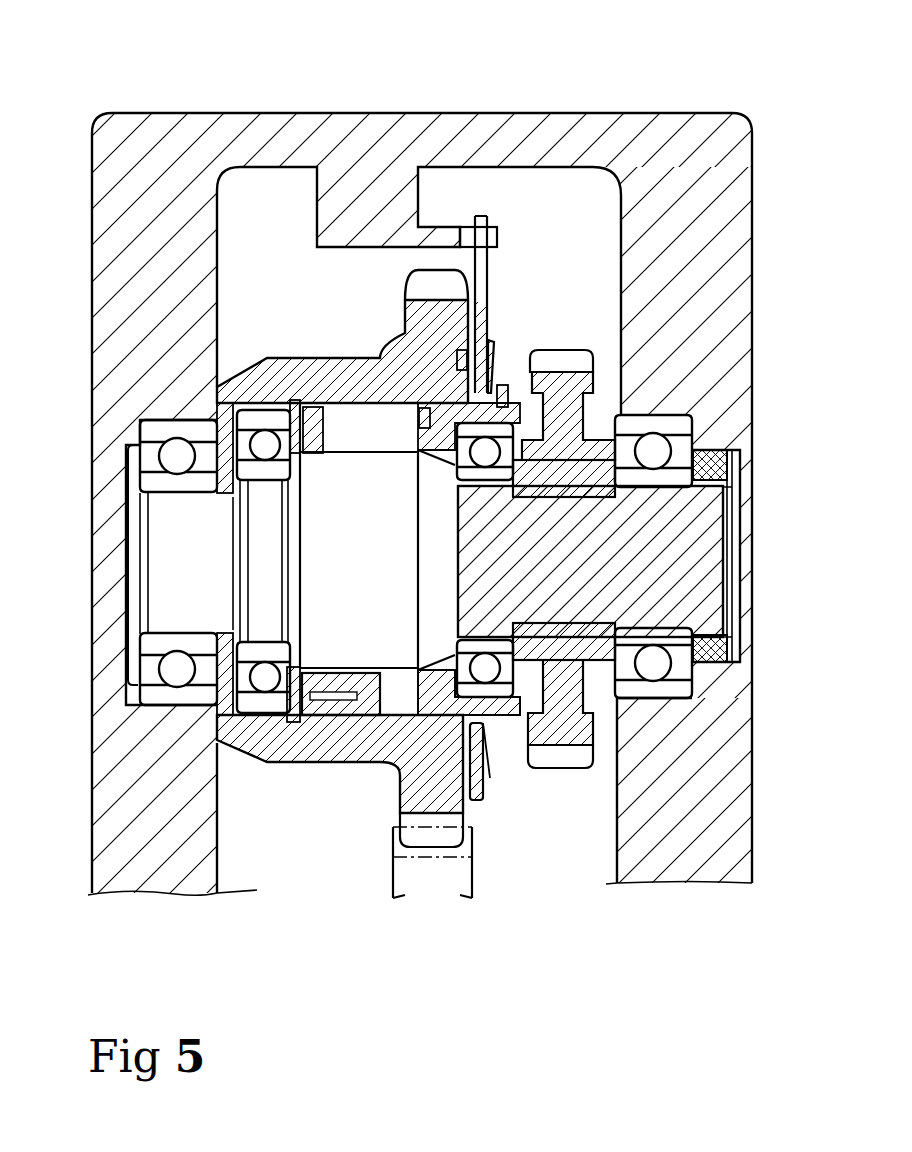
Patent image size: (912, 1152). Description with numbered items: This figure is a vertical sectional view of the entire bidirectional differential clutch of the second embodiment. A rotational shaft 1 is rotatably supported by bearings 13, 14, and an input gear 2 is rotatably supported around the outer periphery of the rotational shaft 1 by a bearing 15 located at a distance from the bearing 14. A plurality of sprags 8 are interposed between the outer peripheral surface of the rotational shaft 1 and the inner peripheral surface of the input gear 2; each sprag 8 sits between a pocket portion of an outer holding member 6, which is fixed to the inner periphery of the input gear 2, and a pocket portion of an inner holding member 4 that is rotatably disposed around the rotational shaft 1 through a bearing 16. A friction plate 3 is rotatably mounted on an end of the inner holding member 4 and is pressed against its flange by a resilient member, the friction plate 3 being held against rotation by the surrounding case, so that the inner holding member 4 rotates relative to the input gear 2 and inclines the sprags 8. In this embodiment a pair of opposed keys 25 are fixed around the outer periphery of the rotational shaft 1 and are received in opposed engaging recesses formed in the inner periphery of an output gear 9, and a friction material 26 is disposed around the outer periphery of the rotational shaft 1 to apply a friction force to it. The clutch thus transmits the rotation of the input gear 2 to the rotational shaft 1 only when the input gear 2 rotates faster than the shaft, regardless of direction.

The rotational shaft 1 is at (677, 598).
The input gear 2 is at (433, 323).
The friction plate 3 is at (489, 312).
The inner holding member 4 is at (462, 705).
The outer holding member 6 is at (322, 703).
The sprag 8 is at (350, 425).
The output gear 9 is at (593, 367).
The bearing 13 is at (672, 692).
The bearing 14 is at (148, 455).
The bearing 15 is at (262, 415).
The bearing 16 is at (502, 690).
The key 25 is at (597, 490).
The friction material 26 is at (730, 450).